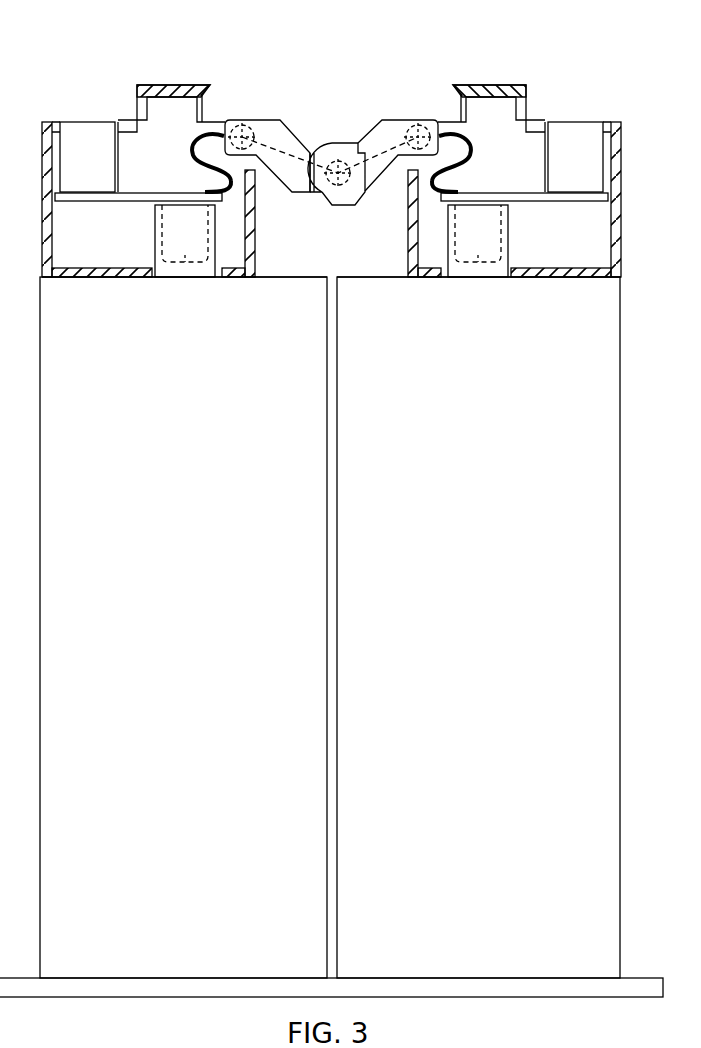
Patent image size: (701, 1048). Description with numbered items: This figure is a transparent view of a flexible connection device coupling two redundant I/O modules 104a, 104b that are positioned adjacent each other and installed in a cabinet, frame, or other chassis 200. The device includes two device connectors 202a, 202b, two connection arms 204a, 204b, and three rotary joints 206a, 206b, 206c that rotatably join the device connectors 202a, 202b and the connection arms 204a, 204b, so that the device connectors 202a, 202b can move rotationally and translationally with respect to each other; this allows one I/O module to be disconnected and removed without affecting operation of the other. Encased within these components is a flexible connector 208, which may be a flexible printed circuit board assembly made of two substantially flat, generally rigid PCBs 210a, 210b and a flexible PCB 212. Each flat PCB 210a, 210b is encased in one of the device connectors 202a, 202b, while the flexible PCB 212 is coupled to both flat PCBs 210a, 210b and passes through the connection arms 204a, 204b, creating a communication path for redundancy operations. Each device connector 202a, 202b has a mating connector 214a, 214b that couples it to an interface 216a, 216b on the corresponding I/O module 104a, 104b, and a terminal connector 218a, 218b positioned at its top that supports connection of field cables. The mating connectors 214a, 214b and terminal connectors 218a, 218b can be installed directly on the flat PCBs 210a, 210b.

The chassis 200 is at (58, 988).
The I/O module 104a is at (195, 656).
The I/O module 104b is at (492, 656).
The device connector 202a is at (165, 85).
The device connector 202b is at (505, 88).
The connection arm 204a is at (263, 120).
The connection arm 204b is at (395, 120).
The rotary joint 206a is at (240, 124).
The rotary joint 206b is at (343, 147).
The rotary joint 206c is at (417, 122).
The flexible connector 208 is at (329, 143).
The flat PCB 210a is at (157, 192).
The flat PCB 210b is at (507, 192).
The flexible PCB 212 is at (497, 132).
The mating connector 214a is at (183, 276).
The mating connector 214b is at (479, 276).
The interface 216a is at (155, 243).
The interface 216b is at (510, 243).
The terminal connector 218a is at (85, 121).
The terminal connector 218b is at (577, 121).